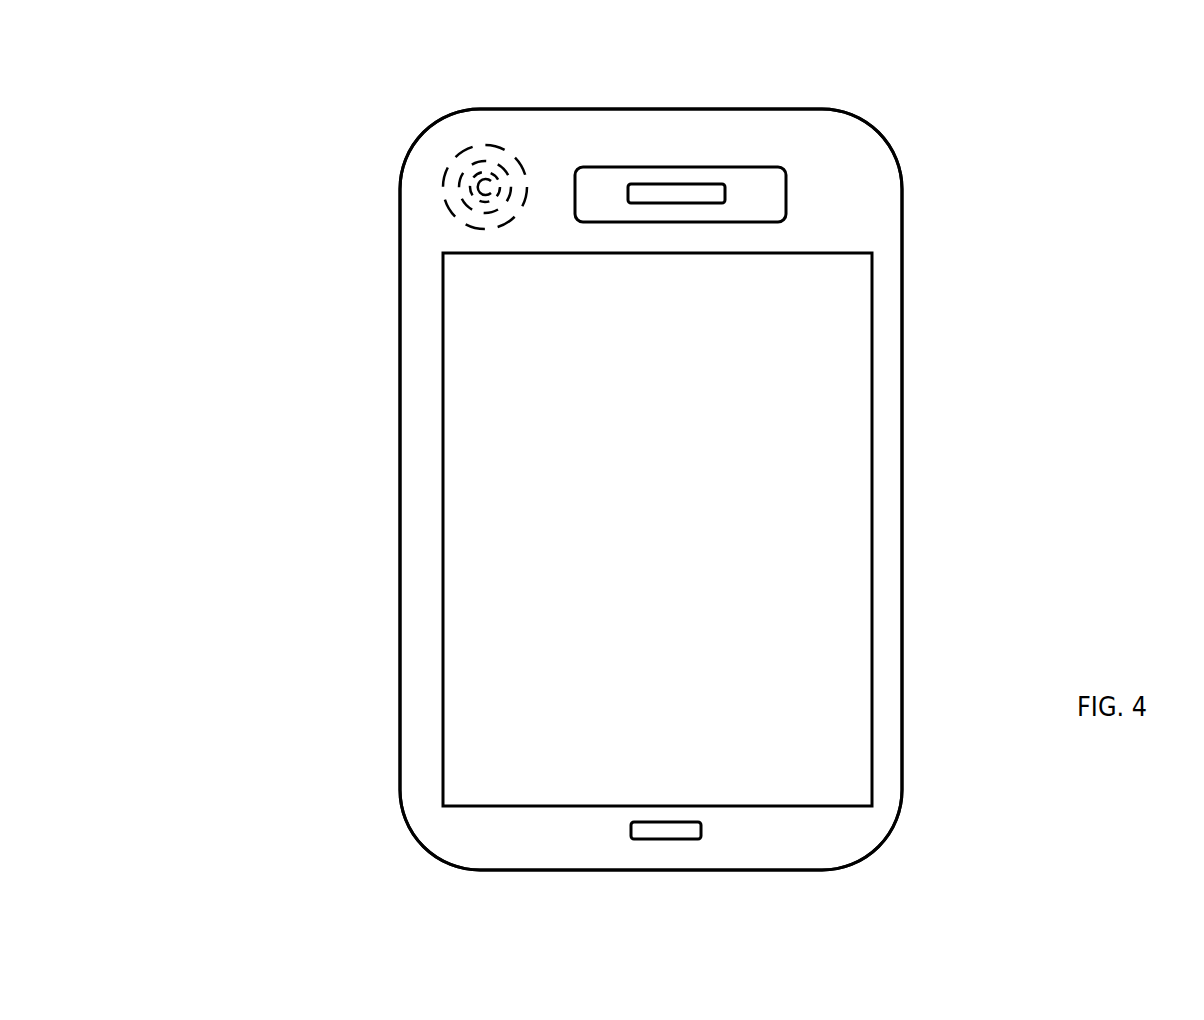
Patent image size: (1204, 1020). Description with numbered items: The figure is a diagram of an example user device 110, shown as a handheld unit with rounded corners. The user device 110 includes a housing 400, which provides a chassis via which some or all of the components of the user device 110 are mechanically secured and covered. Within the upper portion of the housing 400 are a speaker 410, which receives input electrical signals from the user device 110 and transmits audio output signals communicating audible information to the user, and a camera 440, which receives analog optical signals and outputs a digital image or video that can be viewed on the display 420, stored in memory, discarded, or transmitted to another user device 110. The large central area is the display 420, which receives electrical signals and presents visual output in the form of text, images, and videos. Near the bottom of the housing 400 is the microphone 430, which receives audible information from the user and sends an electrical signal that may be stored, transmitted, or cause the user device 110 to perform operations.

The user device 110 is at (308, 110).
The housing 400 is at (402, 380).
The speaker 410 is at (752, 183).
The display 420 is at (858, 387).
The microphone 430 is at (632, 834).
The camera 440 is at (490, 140).